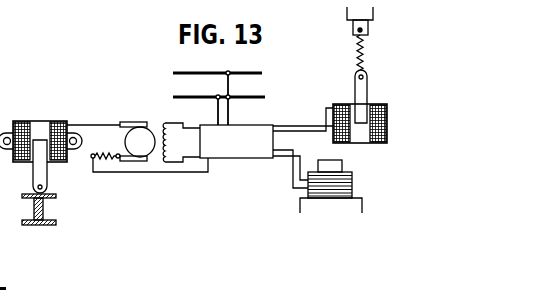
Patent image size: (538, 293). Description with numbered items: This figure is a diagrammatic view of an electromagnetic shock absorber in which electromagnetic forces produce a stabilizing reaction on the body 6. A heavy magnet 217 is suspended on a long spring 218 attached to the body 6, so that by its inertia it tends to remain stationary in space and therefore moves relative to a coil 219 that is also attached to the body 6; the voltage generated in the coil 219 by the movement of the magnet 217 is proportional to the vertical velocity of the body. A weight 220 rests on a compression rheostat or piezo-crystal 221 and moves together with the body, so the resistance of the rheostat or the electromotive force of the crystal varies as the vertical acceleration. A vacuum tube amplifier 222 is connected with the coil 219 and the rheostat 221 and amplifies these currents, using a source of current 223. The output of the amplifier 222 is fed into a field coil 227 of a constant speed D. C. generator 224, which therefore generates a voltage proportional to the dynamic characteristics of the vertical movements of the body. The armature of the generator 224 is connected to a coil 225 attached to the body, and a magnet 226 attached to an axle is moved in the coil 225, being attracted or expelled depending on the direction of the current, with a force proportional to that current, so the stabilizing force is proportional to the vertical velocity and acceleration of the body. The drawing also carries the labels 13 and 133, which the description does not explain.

The body 6 is at (373, 15).
The rail 13 is at (56, 226).
The lever 133 is at (0, 62).
The heavy magnet 217 is at (367, 88).
The long spring 218 is at (364, 50).
The coil 219 is at (387, 118).
The weight 220 is at (342, 163).
The compression rheostat or piezo-crystal 221 is at (352, 185).
The vacuum tube amplifier 222 is at (249, 159).
The source of current 223 is at (264, 72).
The constant speed D. C. generator 224 is at (150, 125).
The coil 225 is at (58, 119).
The magnet 226 is at (47, 178).
The field coil 227 is at (167, 140).